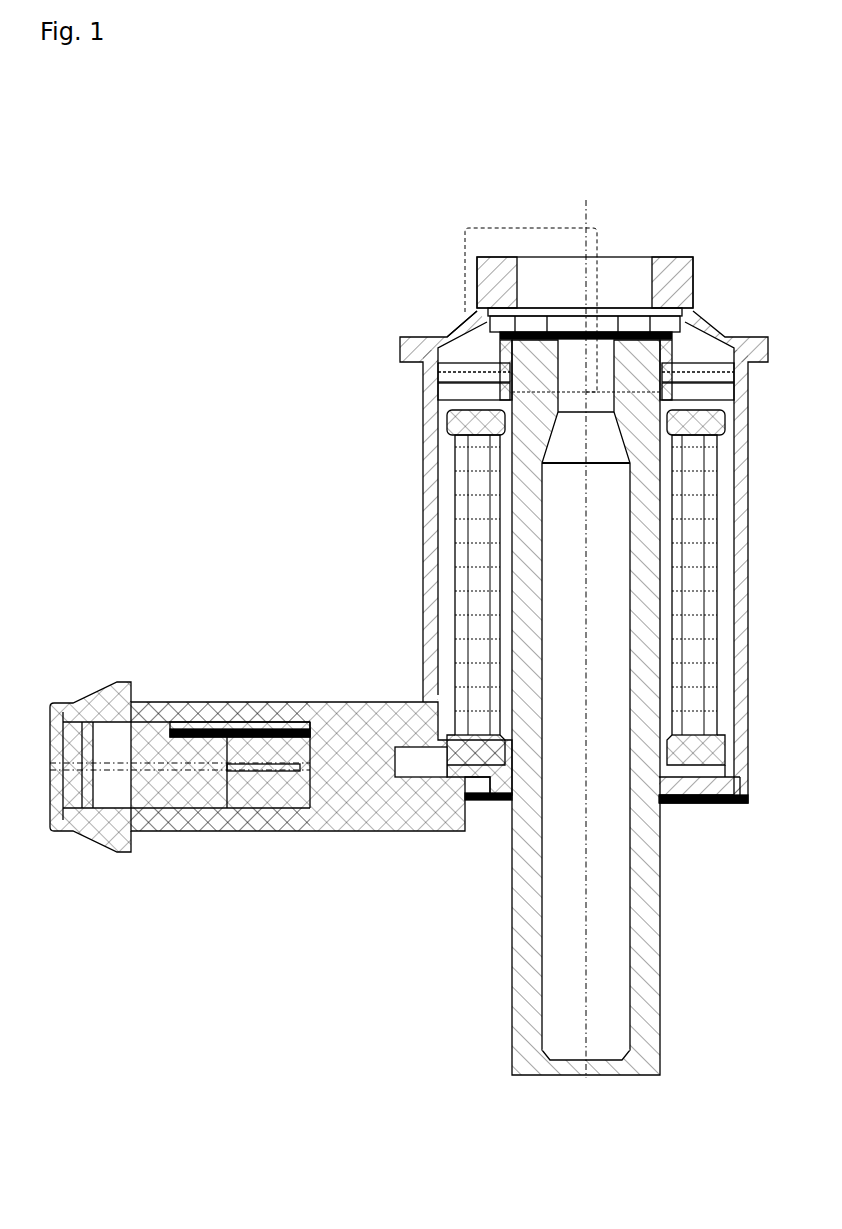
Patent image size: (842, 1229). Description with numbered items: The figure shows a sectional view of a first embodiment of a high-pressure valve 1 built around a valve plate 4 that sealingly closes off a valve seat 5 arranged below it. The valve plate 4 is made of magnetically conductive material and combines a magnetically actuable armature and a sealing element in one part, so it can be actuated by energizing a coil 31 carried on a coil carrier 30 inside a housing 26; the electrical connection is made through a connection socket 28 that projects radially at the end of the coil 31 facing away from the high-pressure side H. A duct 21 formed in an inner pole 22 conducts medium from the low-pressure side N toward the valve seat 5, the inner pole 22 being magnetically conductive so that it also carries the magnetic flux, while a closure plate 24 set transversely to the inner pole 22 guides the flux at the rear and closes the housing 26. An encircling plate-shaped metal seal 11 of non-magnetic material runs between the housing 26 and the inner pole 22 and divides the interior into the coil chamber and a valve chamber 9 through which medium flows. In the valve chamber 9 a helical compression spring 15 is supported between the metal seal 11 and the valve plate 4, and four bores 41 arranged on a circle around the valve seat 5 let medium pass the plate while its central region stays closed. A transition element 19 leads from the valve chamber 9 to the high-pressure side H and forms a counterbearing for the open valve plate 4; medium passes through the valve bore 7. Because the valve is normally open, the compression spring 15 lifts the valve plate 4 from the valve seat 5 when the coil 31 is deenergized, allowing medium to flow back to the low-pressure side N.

The high-pressure valve 1 is at (178, 204).
The valve plate 4 is at (562, 300).
The bores 41 is at (478, 290).
The valve bore 7 is at (600, 330).
The transition element 19 is at (470, 272).
The compression spring 15 is at (466, 338).
The valve chamber 9 is at (468, 333).
The valve seat 5 is at (470, 374).
The metal seal 11 is at (480, 391).
The housing 26 is at (425, 440).
The duct 21 is at (586, 503).
The inner pole 22 is at (518, 557).
The coil 31 is at (500, 595).
The coil carrier 30 is at (445, 630).
The closure plate 24 is at (492, 800).
The connection socket 28 is at (263, 748).
The low-pressure side N is at (586, 1015).
The high-pressure side H is at (583, 618).